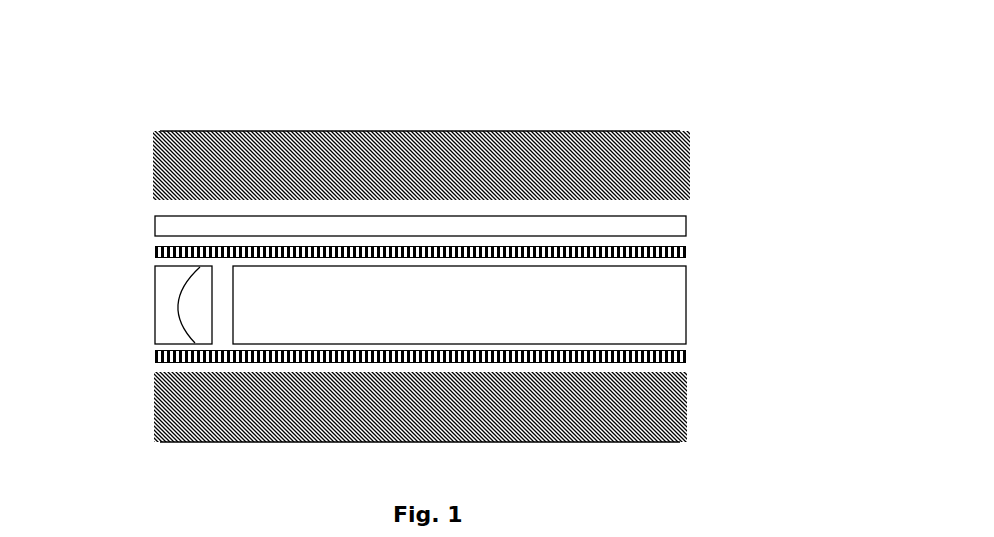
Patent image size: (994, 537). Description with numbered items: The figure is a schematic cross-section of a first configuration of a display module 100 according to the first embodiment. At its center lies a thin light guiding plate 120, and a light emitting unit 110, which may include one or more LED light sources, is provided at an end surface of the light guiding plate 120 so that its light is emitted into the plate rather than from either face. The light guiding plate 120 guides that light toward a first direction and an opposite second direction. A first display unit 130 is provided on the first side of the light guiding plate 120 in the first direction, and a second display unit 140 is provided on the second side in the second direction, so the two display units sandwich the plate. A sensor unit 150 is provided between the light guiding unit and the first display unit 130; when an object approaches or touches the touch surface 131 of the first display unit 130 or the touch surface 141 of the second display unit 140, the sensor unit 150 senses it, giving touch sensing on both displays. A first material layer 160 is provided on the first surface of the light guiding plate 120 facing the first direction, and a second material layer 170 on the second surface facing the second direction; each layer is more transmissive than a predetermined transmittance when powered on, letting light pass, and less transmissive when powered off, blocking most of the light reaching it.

The display module 100 is at (679, 97).
The light emitting unit 110 is at (180, 328).
The light guiding plate 120 is at (686, 313).
The first display unit 130 is at (693, 157).
The touch surface 131 is at (428, 131).
The second display unit 140 is at (687, 428).
The touch surface 141 is at (435, 443).
The sensor unit 150 is at (686, 228).
The first material layer 160 is at (686, 253).
The second material layer 170 is at (687, 358).